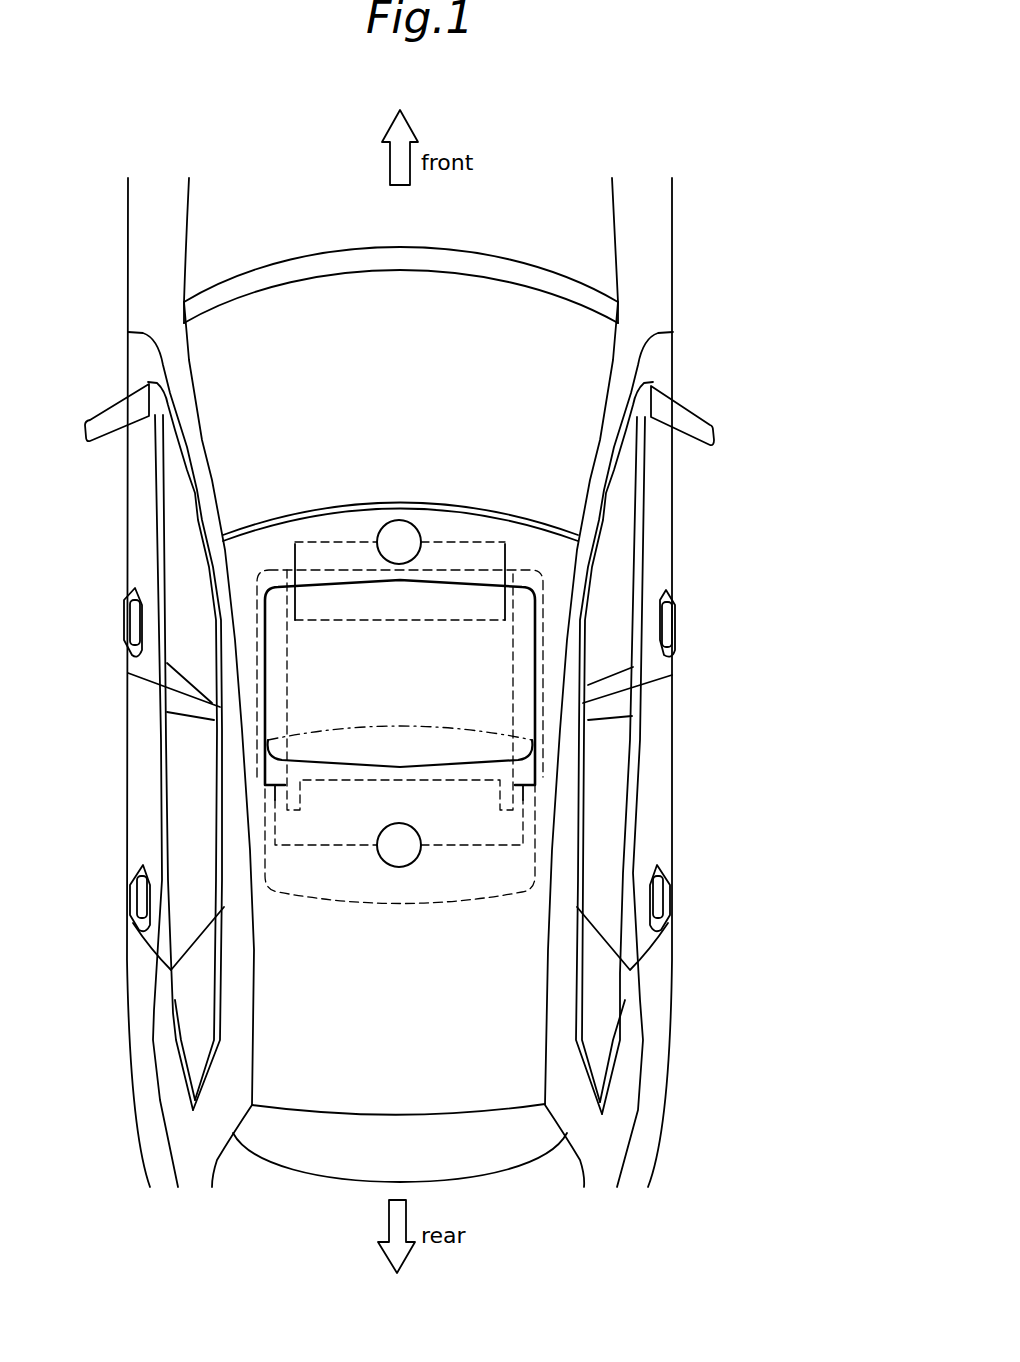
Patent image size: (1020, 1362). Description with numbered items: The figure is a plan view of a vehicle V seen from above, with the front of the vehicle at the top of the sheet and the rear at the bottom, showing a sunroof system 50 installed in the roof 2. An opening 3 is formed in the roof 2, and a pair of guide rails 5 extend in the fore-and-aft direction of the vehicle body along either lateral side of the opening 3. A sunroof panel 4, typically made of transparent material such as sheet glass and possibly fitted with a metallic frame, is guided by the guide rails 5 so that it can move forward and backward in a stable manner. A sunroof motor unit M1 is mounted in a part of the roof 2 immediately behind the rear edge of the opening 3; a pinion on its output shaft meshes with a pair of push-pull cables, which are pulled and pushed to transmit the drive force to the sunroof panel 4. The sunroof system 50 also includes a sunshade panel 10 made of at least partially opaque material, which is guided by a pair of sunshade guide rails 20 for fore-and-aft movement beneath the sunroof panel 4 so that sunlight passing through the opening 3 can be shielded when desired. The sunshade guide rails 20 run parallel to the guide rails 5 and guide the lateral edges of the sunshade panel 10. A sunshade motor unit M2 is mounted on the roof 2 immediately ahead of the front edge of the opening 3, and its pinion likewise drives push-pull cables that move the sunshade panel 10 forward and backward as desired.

The vehicle V is at (690, 302).
The roof 2 is at (250, 603).
The opening 3 is at (425, 683).
The sunroof panel 4 is at (537, 627).
The guide rails 5 is at (545, 747).
The sunshade panel 10 is at (453, 620).
The sunshade guide rails 20 is at (512, 799).
The sunroof system 50 is at (554, 572).
The sunroof motor unit M1 is at (410, 867).
The sunshade motor unit M2 is at (409, 520).